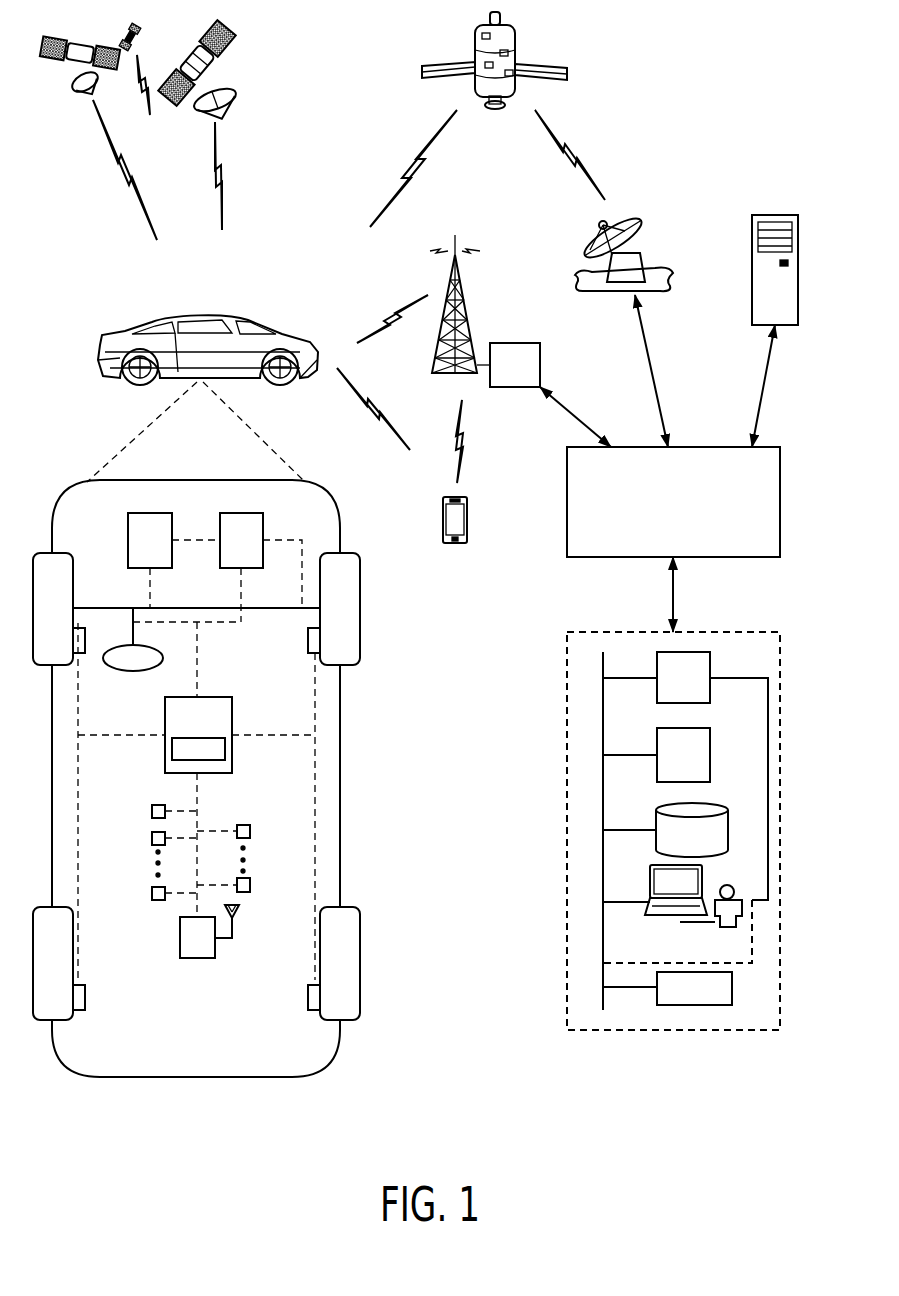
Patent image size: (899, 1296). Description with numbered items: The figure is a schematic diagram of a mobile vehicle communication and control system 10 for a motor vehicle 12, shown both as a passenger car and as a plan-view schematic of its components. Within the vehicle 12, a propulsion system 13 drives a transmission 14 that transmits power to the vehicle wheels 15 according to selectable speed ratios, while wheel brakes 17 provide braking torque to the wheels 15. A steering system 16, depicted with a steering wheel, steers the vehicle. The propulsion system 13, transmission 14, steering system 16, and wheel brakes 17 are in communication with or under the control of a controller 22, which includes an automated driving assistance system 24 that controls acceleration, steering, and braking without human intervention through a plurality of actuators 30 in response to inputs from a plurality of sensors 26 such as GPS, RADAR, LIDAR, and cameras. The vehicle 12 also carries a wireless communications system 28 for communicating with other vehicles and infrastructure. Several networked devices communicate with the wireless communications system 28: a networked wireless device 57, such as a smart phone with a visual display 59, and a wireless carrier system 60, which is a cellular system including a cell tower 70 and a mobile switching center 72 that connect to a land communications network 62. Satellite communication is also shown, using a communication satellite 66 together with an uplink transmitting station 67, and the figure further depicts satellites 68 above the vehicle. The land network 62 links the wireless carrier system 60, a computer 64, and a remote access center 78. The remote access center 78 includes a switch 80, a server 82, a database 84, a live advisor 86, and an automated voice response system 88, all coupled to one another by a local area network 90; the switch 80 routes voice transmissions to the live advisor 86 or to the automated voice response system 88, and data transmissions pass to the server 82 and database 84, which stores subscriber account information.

The mobile vehicle communication and control system 10 is at (727, 91).
The motor vehicle 12 is at (97, 360).
The propulsion system 13 is at (128, 540).
The transmission 14 is at (263, 540).
The vehicle wheels 15 is at (73, 597).
The steering system 16 is at (133, 671).
The wheel brakes 17 is at (308, 648).
The controller 22 is at (232, 712).
The automated driving assistance system 24 is at (200, 760).
The sensors 26 is at (152, 811).
The wireless communications system 28 is at (197, 958).
The actuators 30 is at (250, 831).
The networked wireless device 57 is at (487, 531).
The visual display 59 is at (455, 521).
The wireless carrier system 60 is at (480, 394).
The land communications network 62 is at (780, 520).
The computer 64 is at (798, 285).
The communication satellite 66 is at (515, 45).
The uplink transmitting station 67 is at (655, 262).
The GPS satellites 68 is at (256, 113).
The cell tower 70 is at (465, 290).
The mobile switching center 72 is at (533, 343).
The remote access center 78 is at (668, 1032).
The switch 80 is at (672, 691).
The server 82 is at (672, 769).
The database 84 is at (681, 847).
The live advisor 86 is at (678, 917).
The automated voice response system 88 is at (684, 1001).
The local area network 90 is at (603, 700).